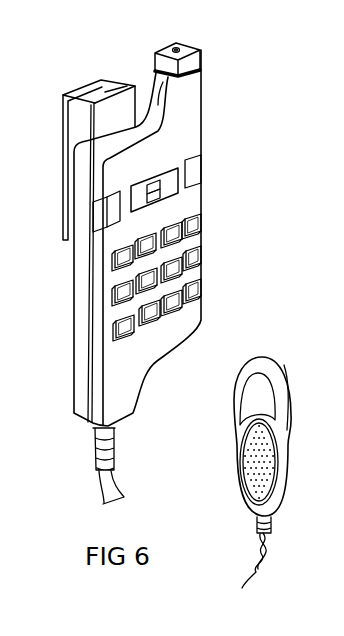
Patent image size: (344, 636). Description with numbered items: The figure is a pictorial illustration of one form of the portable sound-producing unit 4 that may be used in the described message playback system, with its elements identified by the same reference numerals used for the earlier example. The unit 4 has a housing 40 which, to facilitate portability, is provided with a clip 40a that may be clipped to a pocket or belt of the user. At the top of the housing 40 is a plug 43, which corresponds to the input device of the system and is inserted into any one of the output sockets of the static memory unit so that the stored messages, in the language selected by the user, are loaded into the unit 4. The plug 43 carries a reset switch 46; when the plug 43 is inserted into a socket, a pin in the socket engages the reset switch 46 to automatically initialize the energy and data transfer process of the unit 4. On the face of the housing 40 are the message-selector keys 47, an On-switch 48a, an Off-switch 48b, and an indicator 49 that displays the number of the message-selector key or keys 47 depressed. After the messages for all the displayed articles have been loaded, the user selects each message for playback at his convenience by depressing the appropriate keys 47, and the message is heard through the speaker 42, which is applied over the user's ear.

The portable sound-producing unit 4 is at (54, 201).
The housing 40 is at (202, 232).
The clip 40a is at (90, 90).
The speaker 42 is at (233, 457).
The plug 43 is at (198, 57).
The reset switch 46 is at (182, 46).
The message-selector keys 47 is at (200, 247).
The On-switch 48a is at (95, 222).
The Off-switch 48b is at (198, 161).
The indicator 49 is at (164, 172).